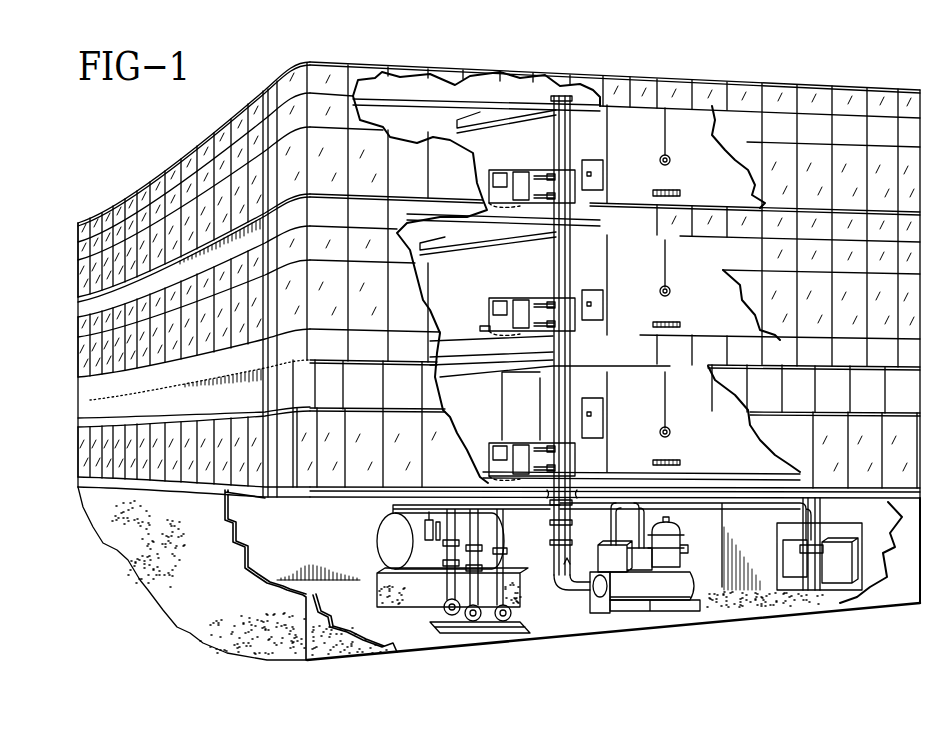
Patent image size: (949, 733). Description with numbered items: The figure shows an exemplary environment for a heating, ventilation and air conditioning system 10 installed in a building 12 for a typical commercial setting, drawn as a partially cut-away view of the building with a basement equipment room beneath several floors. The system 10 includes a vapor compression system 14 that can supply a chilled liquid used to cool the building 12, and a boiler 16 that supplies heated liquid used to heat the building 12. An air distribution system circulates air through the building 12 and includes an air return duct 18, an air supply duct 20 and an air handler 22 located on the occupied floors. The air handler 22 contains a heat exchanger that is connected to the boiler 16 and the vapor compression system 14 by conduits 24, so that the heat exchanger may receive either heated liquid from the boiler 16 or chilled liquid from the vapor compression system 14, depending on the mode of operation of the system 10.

The heating, ventilation and air conditioning system 10 is at (740, 634).
The building 12 is at (814, 89).
The vapor compression system 14 is at (626, 586).
The boiler 16 is at (372, 536).
The air return duct 18 is at (486, 326).
The air supply duct 20 is at (556, 104).
The air handler 22 is at (522, 297).
The conduits 24 is at (552, 488).